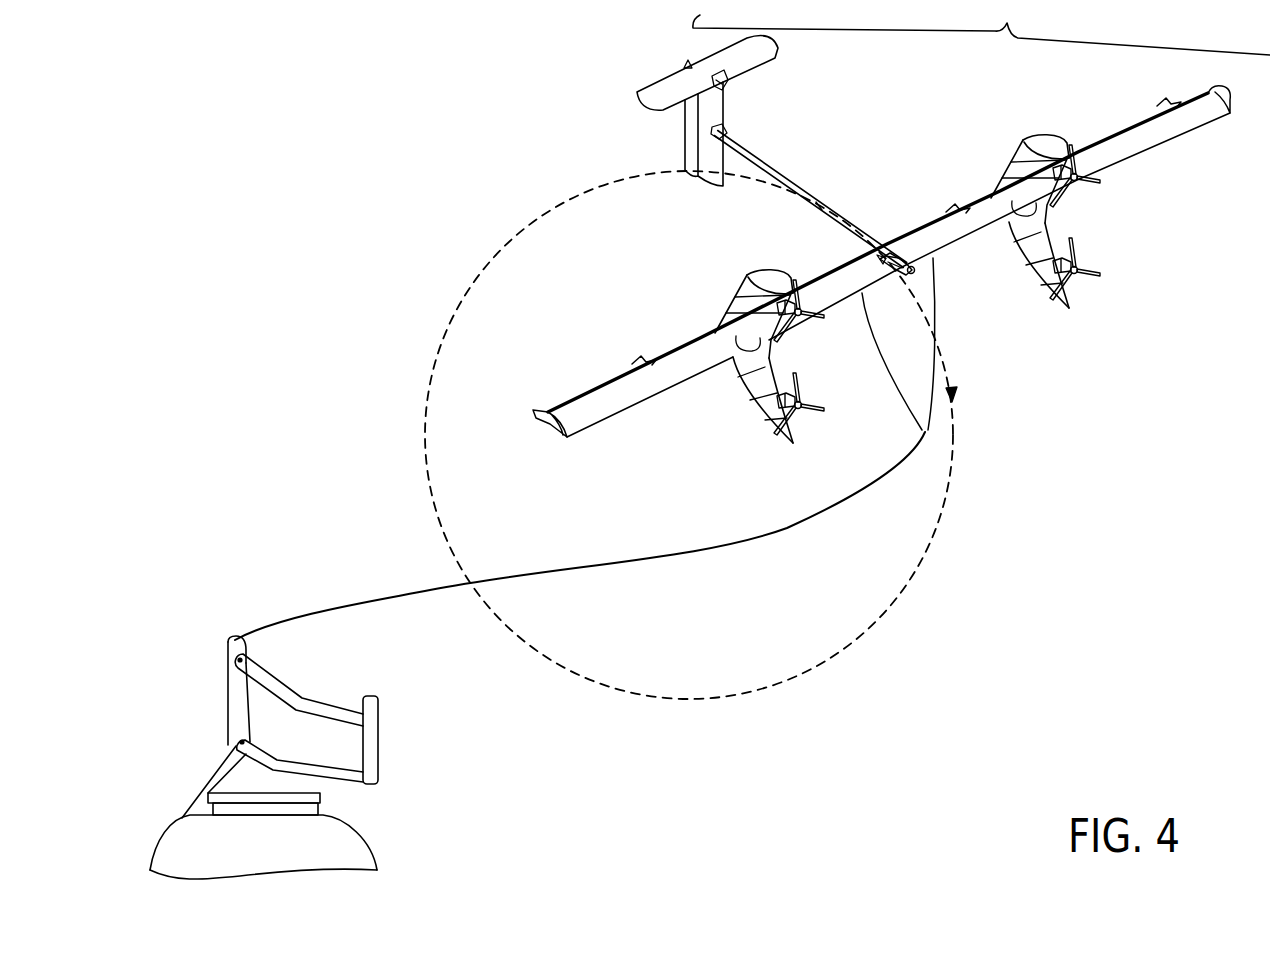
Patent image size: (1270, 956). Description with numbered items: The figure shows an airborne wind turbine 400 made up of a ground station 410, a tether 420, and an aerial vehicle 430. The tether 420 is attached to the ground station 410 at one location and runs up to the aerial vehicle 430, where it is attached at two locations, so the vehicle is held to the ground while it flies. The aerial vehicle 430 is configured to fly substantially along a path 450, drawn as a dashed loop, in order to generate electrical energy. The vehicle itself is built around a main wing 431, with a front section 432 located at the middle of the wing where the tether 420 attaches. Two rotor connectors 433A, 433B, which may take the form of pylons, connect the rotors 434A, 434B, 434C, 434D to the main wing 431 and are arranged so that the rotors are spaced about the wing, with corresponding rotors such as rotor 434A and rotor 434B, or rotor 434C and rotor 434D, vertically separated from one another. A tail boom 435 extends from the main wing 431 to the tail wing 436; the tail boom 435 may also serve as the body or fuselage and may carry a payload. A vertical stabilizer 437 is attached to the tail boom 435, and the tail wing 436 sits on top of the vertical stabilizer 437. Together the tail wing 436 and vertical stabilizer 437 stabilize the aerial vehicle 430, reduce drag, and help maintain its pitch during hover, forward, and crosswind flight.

The airborne wind turbine 400 is at (234, 237).
The ground station 410 is at (238, 702).
The tether 420 is at (362, 602).
The aerial vehicle 430 is at (981, 27).
The main wing 431 is at (953, 238).
The front section 432 is at (912, 278).
The rotor connector 433A is at (1022, 148).
The rotor connector 433B is at (748, 290).
The rotor 434A is at (1067, 195).
The rotor 434B is at (1068, 287).
The rotor 434C is at (790, 325).
The rotor 434D is at (790, 415).
The tail boom 435 is at (788, 182).
The tail wing 436 is at (768, 42).
The vertical stabilizer 437 is at (712, 183).
The path 450 is at (490, 260).